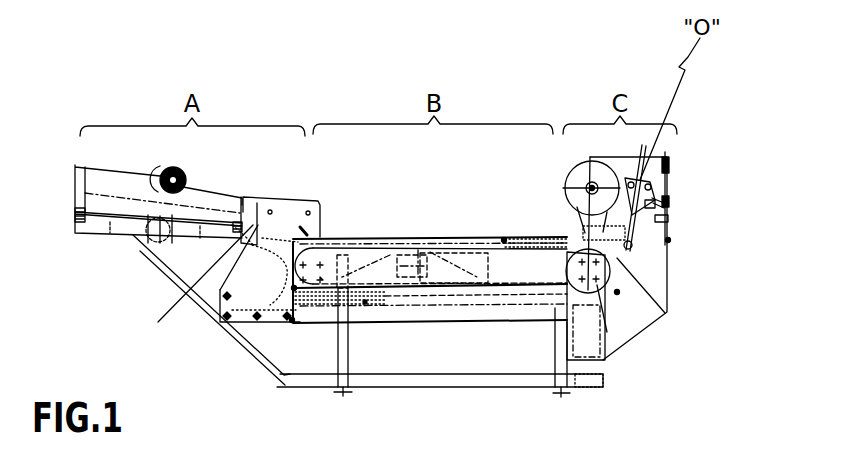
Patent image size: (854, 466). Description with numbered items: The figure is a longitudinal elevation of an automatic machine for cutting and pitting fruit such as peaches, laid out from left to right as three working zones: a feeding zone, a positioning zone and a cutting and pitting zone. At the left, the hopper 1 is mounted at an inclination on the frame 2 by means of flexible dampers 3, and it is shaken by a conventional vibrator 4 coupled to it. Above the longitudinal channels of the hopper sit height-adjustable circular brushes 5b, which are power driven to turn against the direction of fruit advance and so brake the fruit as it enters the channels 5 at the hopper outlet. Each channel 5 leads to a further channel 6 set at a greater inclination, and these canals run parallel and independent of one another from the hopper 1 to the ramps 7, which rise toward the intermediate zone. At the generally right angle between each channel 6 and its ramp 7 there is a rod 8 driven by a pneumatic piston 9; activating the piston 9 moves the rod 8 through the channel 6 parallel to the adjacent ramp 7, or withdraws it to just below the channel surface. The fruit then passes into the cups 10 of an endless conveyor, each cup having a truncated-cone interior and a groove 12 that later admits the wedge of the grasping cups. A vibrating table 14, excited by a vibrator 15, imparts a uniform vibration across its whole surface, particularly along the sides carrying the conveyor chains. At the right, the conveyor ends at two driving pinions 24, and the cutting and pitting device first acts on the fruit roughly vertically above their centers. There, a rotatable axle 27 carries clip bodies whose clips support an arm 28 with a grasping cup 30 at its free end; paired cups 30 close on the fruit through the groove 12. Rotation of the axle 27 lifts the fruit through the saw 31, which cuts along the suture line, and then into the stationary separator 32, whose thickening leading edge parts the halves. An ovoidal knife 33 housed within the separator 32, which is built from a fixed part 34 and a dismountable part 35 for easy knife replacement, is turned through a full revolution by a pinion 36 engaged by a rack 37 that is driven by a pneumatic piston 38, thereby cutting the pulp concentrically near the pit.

The hopper 1 is at (122, 187).
The frame 2 is at (192, 306).
The flexible dampers 3 is at (76, 219).
The vibrator 4 is at (147, 236).
The channels 5 is at (210, 200).
The circular brushes 5b is at (183, 169).
The further channels 6 is at (252, 237).
The ramps 7 is at (303, 230).
The rod 8 is at (282, 208).
The pneumatic piston 9 is at (222, 322).
The cups 10 is at (291, 321).
The groove 12 is at (511, 240).
The vibrating table 14 is at (468, 256).
The vibrator 15 is at (418, 262).
The driving pinions 24 is at (605, 358).
The rotatable axle 27 is at (619, 259).
The arm 28 is at (629, 182).
The grasping cup 30 is at (585, 232).
The saw 31 is at (584, 173).
The stationary separator 32 is at (632, 165).
The ovoidal knife 33 is at (672, 183).
The fixed part 34 is at (640, 178).
The dismountable part 35 is at (632, 246).
The pinion 36 is at (668, 208).
The rack 37 is at (670, 165).
The pneumatic piston 38 is at (667, 150).